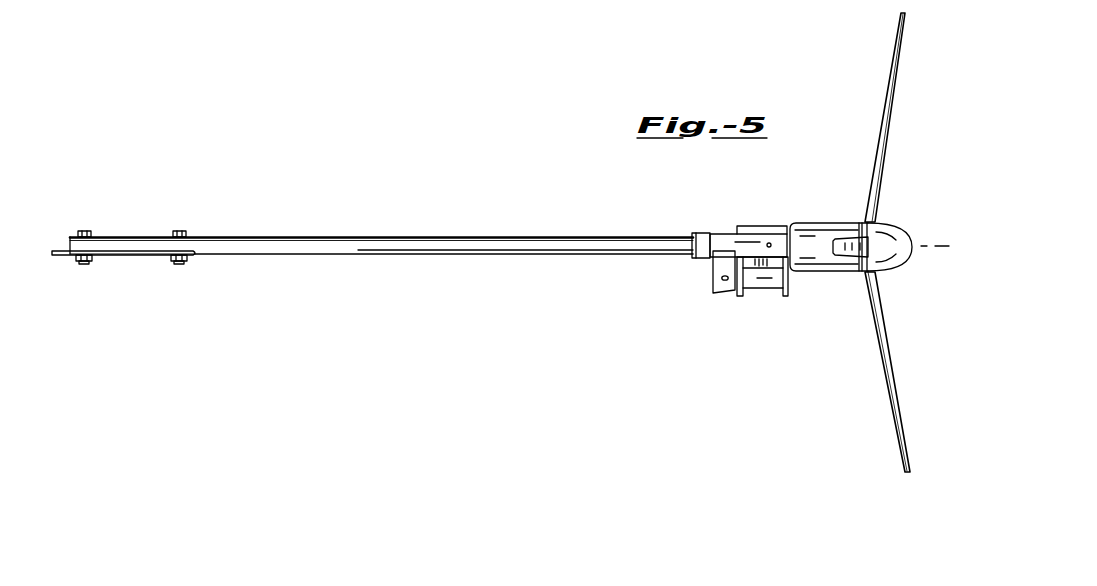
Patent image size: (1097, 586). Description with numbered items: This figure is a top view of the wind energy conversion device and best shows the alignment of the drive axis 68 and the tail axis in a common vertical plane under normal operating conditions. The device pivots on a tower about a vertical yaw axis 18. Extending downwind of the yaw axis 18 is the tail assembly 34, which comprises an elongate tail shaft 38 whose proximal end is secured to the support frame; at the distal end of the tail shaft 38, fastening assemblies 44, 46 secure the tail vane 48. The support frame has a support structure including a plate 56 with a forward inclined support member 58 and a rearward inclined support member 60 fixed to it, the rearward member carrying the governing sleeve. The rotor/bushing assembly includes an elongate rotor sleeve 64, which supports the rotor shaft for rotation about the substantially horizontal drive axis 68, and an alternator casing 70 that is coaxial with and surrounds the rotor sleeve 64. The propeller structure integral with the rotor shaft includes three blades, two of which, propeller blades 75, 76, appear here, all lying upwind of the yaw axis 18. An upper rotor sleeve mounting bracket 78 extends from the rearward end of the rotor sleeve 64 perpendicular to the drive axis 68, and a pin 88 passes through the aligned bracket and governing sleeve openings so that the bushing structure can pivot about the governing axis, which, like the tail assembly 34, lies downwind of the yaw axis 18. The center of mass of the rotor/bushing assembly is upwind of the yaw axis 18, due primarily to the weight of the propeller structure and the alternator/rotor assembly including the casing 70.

The yaw axis 18 is at (769, 243).
The tail assembly 34 is at (328, 226).
The tail shaft 38 is at (368, 256).
The fastening assembly 44 is at (83, 265).
The fastening assembly 46 is at (178, 265).
The tail vane 48 is at (62, 257).
The plate 56 is at (753, 272).
The forward inclined support member 58 is at (790, 280).
The rearward inclined support member 60 is at (738, 295).
The rotor sleeve 64 is at (712, 232).
The drive axis 68 is at (935, 244).
The alternator casing 70 is at (842, 222).
The propeller blade 75 is at (888, 87).
The propeller blade 76 is at (880, 358).
The upper rotor sleeve mounting bracket 78 is at (712, 266).
The pin 88 is at (722, 280).